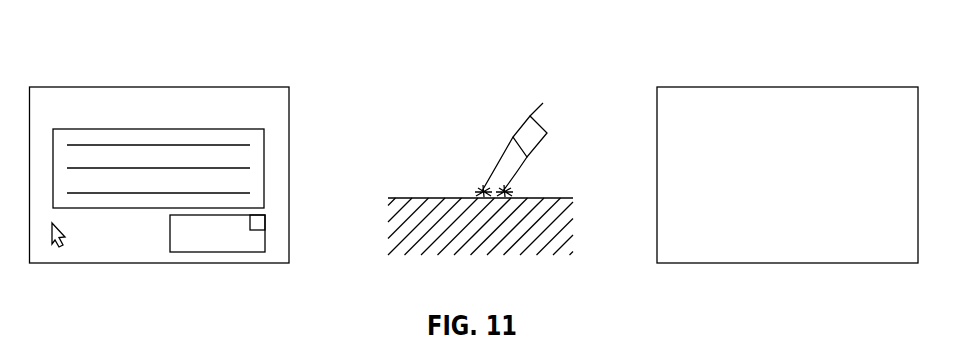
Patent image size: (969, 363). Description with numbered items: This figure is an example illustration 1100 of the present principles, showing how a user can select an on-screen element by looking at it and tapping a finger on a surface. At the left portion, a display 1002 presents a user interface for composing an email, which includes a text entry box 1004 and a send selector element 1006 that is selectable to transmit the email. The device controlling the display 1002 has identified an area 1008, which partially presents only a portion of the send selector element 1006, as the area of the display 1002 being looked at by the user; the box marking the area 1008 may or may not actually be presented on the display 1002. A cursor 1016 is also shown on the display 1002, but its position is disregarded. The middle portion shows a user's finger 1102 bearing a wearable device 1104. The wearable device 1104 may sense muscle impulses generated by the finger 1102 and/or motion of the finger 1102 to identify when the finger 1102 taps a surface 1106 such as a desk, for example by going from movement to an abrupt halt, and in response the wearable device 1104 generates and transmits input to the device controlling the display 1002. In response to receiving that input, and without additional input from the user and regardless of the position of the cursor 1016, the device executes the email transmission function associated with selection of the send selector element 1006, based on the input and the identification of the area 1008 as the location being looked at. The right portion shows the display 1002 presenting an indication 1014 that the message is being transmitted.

The display 1002 is at (230, 87).
The text entry box 1004 is at (211, 129).
The send selector element 1006 is at (170, 227).
The area 1008 is at (265, 215).
The indication that the message is being transmitted 1014 is at (813, 163).
The cursor 1016 is at (53, 247).
The example illustration 1100 is at (390, 63).
The finger 1102 is at (500, 131).
The wearable device 1104 is at (513, 136).
The surface 1106 is at (481, 226).